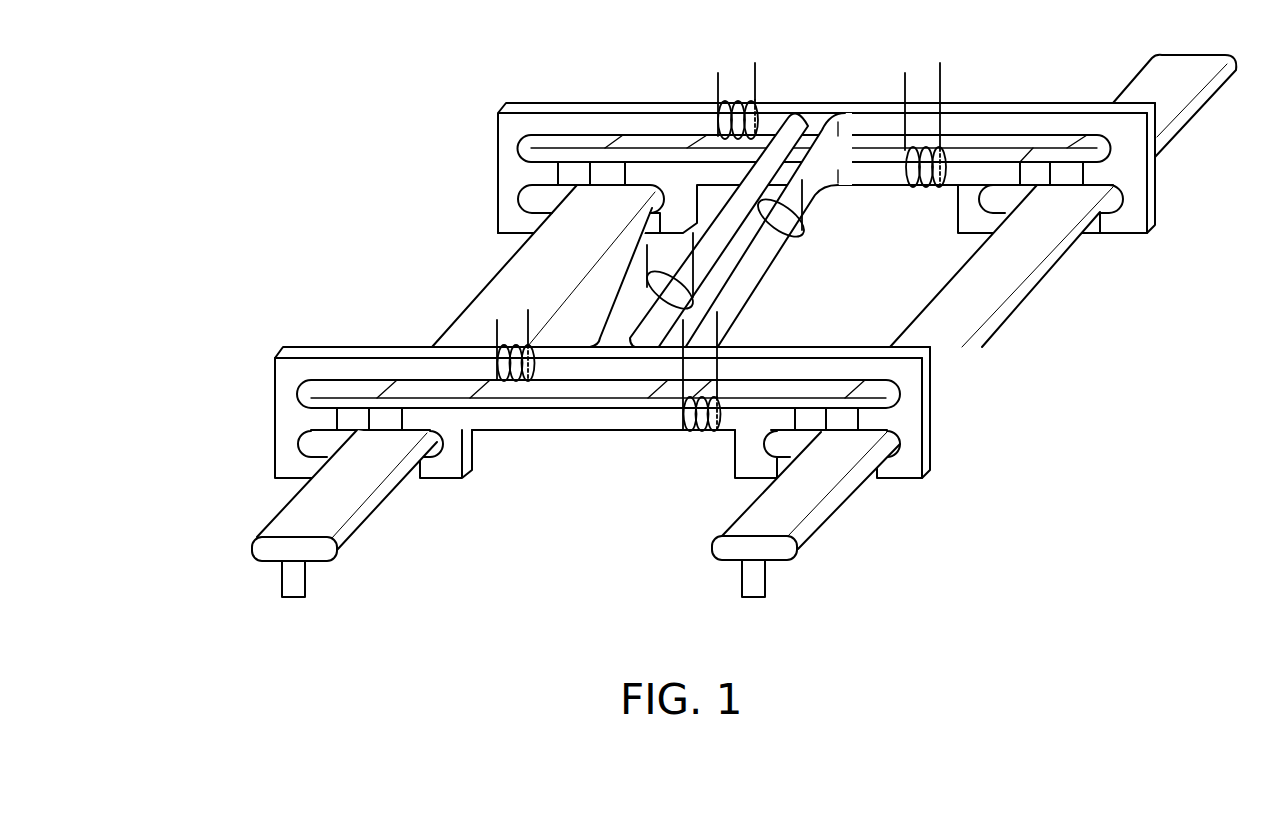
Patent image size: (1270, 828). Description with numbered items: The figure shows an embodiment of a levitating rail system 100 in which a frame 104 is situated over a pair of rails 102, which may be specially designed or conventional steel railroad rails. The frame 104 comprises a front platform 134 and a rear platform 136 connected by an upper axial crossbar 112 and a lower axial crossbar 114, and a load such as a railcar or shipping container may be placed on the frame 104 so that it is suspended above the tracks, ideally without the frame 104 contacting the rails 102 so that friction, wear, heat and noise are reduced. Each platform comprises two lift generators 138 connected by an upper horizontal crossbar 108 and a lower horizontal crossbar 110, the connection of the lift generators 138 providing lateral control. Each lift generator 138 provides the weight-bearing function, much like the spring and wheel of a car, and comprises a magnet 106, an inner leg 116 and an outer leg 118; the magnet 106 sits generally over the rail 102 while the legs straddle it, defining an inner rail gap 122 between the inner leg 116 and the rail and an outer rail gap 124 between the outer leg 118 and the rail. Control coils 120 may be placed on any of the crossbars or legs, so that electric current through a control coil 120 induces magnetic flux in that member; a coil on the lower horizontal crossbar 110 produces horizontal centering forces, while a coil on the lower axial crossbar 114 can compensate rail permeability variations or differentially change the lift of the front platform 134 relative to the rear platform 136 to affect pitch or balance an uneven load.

The levitating rail system 100 is at (713, 326).
The rail 102 is at (272, 520).
The frame 104 is at (600, 419).
The magnet 106 is at (372, 432).
The upper horizontal crossbar 108 is at (788, 348).
The lower horizontal crossbar 110 is at (570, 432).
The upper axial crossbar 112 is at (630, 311).
The lower axial crossbar 114 is at (768, 262).
The inner leg 116 is at (455, 480).
The outer leg 118 is at (275, 448).
The control coil 120 is at (495, 332).
The inner rail gap 122 is at (757, 445).
The outer rail gap 124 is at (872, 478).
The front platform 134 is at (930, 452).
The rear platform 136 is at (1152, 228).
The lift generator 138 is at (932, 422).